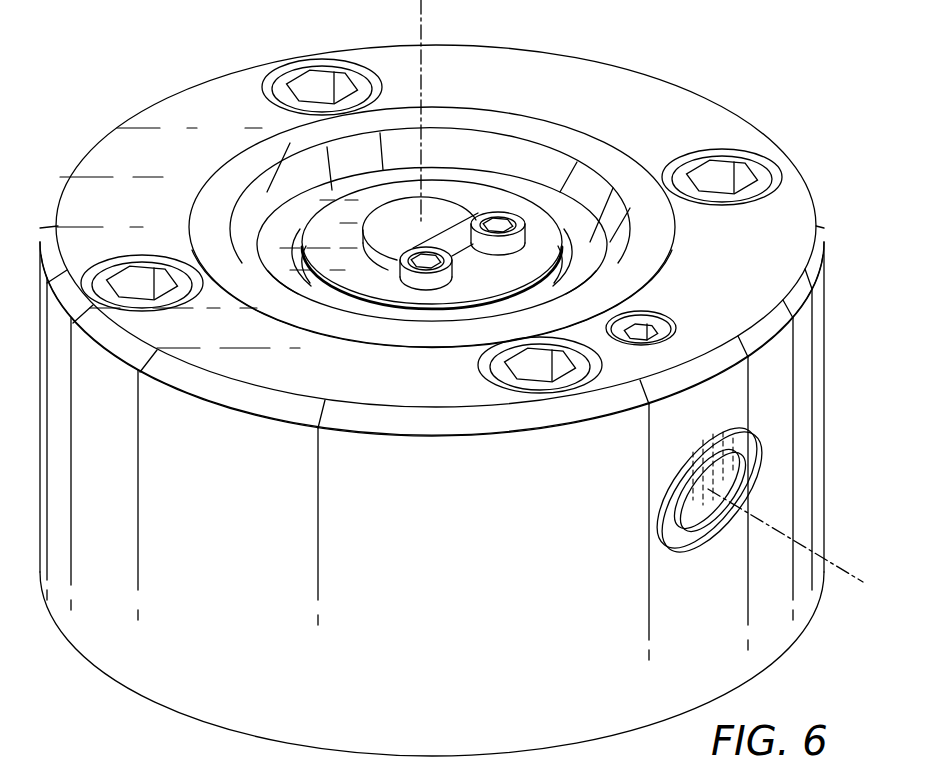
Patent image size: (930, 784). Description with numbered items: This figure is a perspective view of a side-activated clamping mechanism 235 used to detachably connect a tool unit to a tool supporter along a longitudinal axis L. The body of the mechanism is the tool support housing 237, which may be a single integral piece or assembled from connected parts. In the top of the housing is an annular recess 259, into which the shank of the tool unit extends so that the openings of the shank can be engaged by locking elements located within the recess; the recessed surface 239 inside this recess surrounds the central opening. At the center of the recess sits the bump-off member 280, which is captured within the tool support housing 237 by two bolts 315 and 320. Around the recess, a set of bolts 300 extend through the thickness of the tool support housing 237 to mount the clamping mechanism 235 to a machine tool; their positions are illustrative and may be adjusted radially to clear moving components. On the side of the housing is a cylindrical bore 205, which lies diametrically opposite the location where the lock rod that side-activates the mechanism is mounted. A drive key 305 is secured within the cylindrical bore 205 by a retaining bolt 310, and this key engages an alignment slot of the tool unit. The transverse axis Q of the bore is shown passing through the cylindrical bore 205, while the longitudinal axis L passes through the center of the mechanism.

The clamping mechanism 235 is at (618, 67).
The tool support housing 237 is at (828, 288).
The annular recess 259 is at (590, 188).
The recess floor / central bore 239 is at (513, 200).
The bump-off member 280 is at (440, 205).
The bolt 315 is at (423, 283).
The bolt 320 is at (525, 238).
The bolts 300 is at (313, 82).
The retaining bolt 310 is at (638, 333).
The drive key 305 is at (688, 526).
The cylindrical bore 205 is at (720, 538).
The longitudinal axis L is at (421, 28).
The transverse axis Q is at (863, 582).